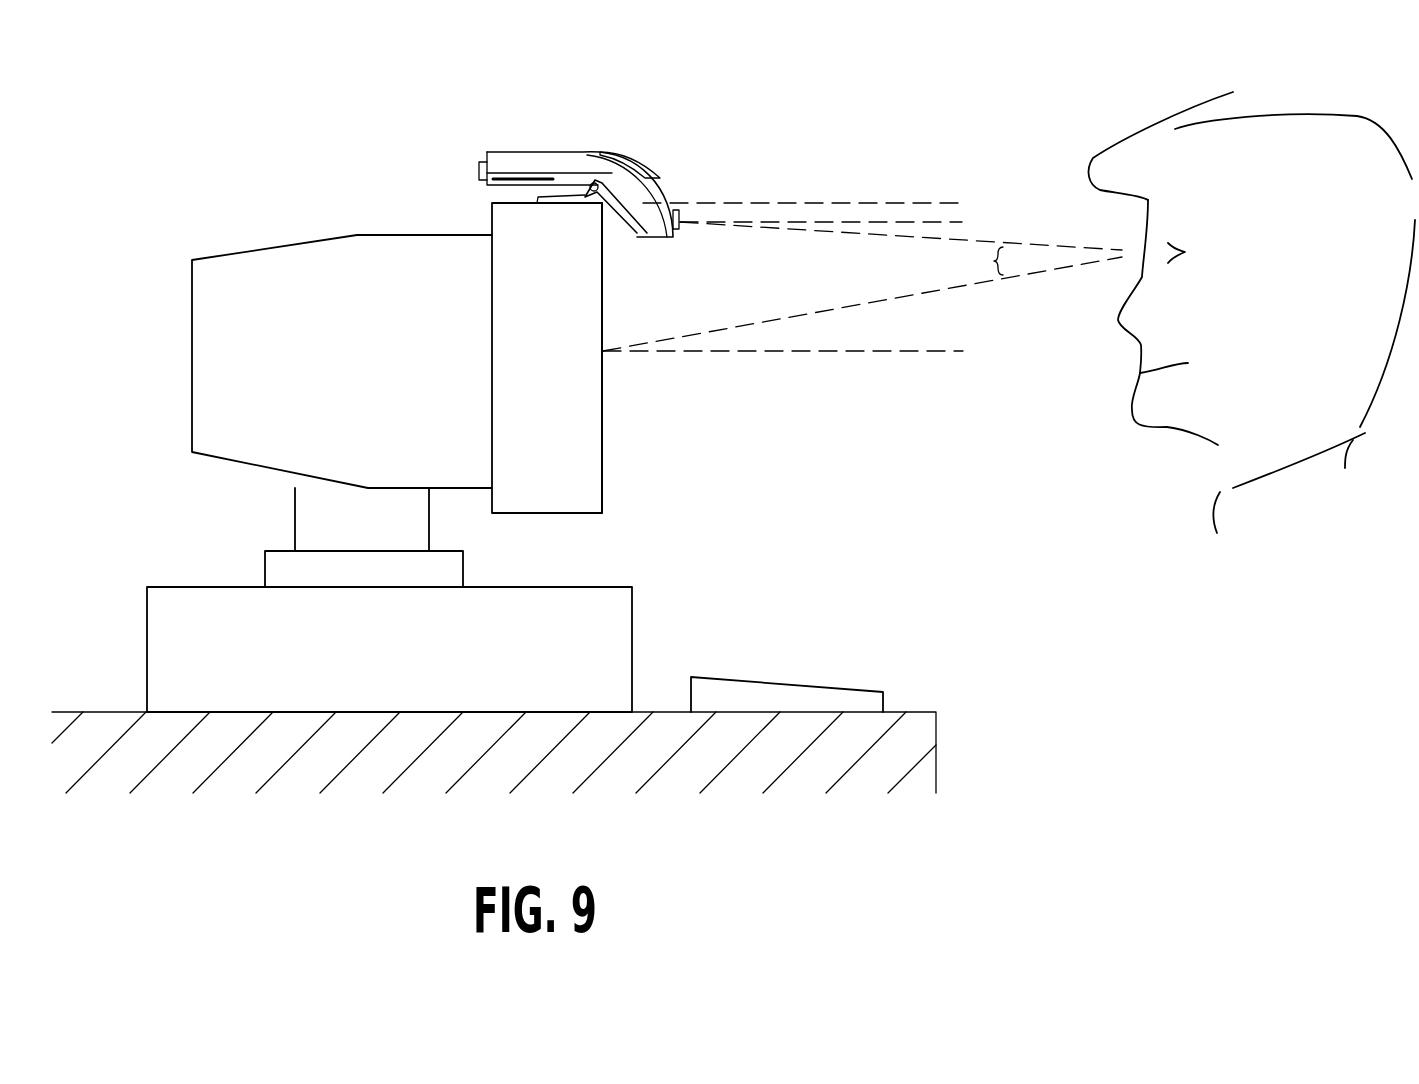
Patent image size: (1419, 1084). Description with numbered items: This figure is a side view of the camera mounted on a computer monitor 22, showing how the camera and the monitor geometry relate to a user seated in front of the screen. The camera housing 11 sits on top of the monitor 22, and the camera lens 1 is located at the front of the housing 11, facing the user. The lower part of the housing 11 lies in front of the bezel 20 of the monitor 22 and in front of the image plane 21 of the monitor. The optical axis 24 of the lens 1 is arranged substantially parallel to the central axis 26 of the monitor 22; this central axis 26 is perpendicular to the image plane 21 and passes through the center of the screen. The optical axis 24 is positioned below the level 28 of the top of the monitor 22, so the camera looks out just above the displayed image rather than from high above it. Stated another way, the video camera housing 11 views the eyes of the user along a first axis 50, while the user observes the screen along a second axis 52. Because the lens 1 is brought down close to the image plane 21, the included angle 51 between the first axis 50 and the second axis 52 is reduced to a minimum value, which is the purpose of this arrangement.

The camera lens 1 is at (678, 230).
The camera housing 11 is at (558, 173).
The bezel 20 is at (567, 462).
The image plane 21 is at (602, 393).
The monitor 22 is at (391, 367).
The optical axis 24 is at (953, 222).
The central axis 26 is at (903, 353).
The level of the top of the monitor 28 is at (763, 203).
The first axis 50 is at (1018, 245).
The included angle 51 is at (990, 262).
The second axis 52 is at (800, 315).